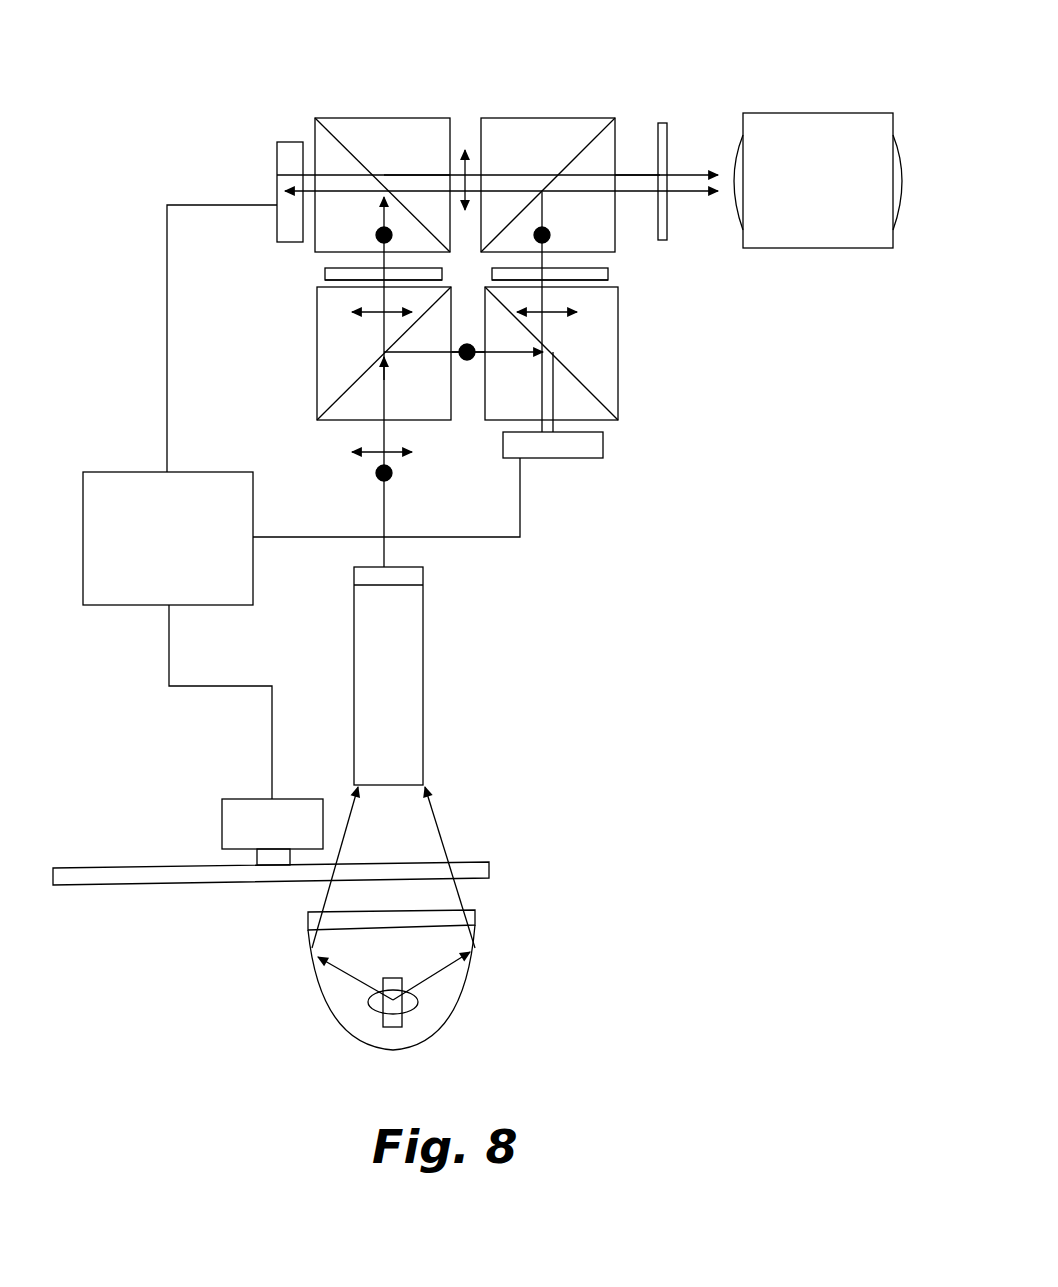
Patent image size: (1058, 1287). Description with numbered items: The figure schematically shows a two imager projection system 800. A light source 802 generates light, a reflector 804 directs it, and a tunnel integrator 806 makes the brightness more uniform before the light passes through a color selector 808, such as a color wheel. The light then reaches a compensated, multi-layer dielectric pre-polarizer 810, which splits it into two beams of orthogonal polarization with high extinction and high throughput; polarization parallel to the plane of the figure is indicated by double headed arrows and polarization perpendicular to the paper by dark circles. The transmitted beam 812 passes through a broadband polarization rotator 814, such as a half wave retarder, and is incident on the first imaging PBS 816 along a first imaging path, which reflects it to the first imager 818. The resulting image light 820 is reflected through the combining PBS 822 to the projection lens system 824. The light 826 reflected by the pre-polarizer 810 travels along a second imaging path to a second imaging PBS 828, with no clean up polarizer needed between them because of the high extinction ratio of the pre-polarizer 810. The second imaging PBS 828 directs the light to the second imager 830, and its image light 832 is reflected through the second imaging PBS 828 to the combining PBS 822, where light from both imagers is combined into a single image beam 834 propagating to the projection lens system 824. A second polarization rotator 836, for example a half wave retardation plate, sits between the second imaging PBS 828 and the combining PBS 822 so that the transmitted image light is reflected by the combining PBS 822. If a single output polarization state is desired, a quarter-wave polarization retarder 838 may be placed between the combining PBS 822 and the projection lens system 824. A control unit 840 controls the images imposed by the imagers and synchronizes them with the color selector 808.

The two imager projection system 800 is at (757, 442).
The light source 802 is at (395, 1027).
The reflector 804 is at (350, 1030).
The tunnel integrator 806 is at (425, 660).
The color selector 808 is at (476, 917).
The pre-polarizer 810 is at (317, 355).
The transmitted beam 812 is at (330, 266).
The broadband polarization rotator 814 is at (325, 280).
The first imaging PBS 816 is at (350, 117).
The first imager 818 is at (277, 148).
The image light 820 is at (422, 176).
The combining PBS 822 is at (513, 117).
The projection lens system 824 is at (818, 113).
The reflected light 826 is at (454, 373).
The second imaging PBS 828 is at (618, 368).
The second imager 830 is at (568, 458).
The image light 832 is at (560, 262).
The single image beam 834 is at (642, 170).
The second polarization rotator 836 is at (610, 275).
The quarter-wave polarization retarder 838 is at (663, 122).
The control unit 840 is at (123, 472).